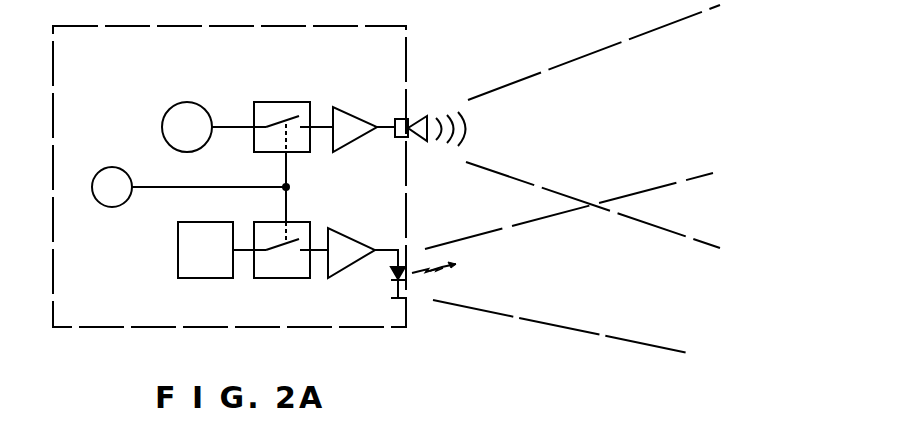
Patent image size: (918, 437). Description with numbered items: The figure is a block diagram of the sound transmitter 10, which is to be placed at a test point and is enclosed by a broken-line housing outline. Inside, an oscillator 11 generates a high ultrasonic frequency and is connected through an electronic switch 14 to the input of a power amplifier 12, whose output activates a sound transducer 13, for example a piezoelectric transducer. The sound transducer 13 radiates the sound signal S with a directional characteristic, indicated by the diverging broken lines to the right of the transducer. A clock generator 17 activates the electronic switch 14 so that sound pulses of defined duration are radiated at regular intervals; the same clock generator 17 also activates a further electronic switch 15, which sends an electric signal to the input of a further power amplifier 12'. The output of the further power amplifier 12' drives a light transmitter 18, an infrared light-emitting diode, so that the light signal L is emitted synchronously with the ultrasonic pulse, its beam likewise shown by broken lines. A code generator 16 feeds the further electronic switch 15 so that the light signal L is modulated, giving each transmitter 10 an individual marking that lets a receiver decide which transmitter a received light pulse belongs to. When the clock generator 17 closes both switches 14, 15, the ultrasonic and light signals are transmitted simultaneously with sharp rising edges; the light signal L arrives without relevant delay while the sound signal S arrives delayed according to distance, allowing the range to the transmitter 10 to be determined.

The sound transmitter 10 is at (327, 330).
The oscillator 11 is at (188, 106).
The power amplifier 12 is at (364, 111).
The further power amplifier 12' is at (363, 240).
The sound transducer 13 is at (405, 118).
The electronic switch 14 is at (270, 110).
The further electronic switch 15 is at (285, 282).
The code generator 16 is at (203, 280).
The clock generator 17 is at (115, 205).
The light transmitter 18 is at (405, 288).
The sound signal S is at (600, 52).
The light signal L is at (612, 338).